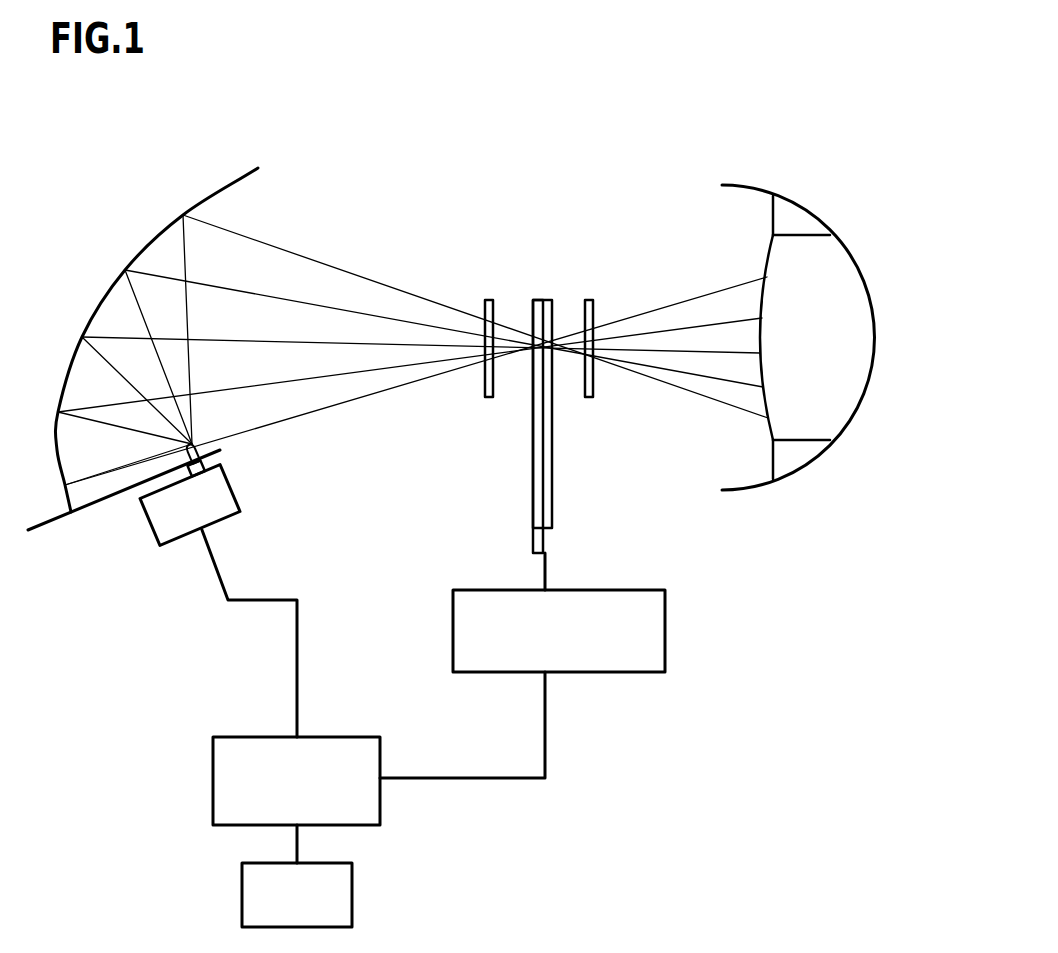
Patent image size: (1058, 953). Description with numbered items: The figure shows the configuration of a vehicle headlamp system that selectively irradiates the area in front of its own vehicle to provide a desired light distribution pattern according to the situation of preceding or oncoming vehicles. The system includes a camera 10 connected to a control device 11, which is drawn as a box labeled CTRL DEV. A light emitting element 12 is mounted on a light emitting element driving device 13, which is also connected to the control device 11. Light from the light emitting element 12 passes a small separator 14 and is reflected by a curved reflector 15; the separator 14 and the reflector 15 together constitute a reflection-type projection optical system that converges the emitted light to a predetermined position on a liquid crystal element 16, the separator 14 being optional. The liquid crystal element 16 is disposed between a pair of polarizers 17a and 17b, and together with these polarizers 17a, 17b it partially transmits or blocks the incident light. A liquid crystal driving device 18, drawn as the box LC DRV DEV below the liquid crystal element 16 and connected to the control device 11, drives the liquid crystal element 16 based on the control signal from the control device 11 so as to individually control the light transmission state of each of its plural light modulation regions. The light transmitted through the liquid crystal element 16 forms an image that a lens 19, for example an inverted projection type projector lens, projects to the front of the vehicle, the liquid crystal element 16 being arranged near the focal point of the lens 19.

The camera 10 is at (352, 885).
The control device 11 is at (338, 735).
The light emitting element 12 is at (212, 478).
The light emitting element driving device 13 is at (143, 523).
The separator 14 is at (199, 449).
The reflector 15 is at (215, 188).
The liquid crystal element 16 is at (540, 298).
The polarizer 17a is at (488, 298).
The polarizer 17b is at (587, 298).
The liquid crystal driving device 18 is at (665, 628).
The lens 19 is at (858, 273).